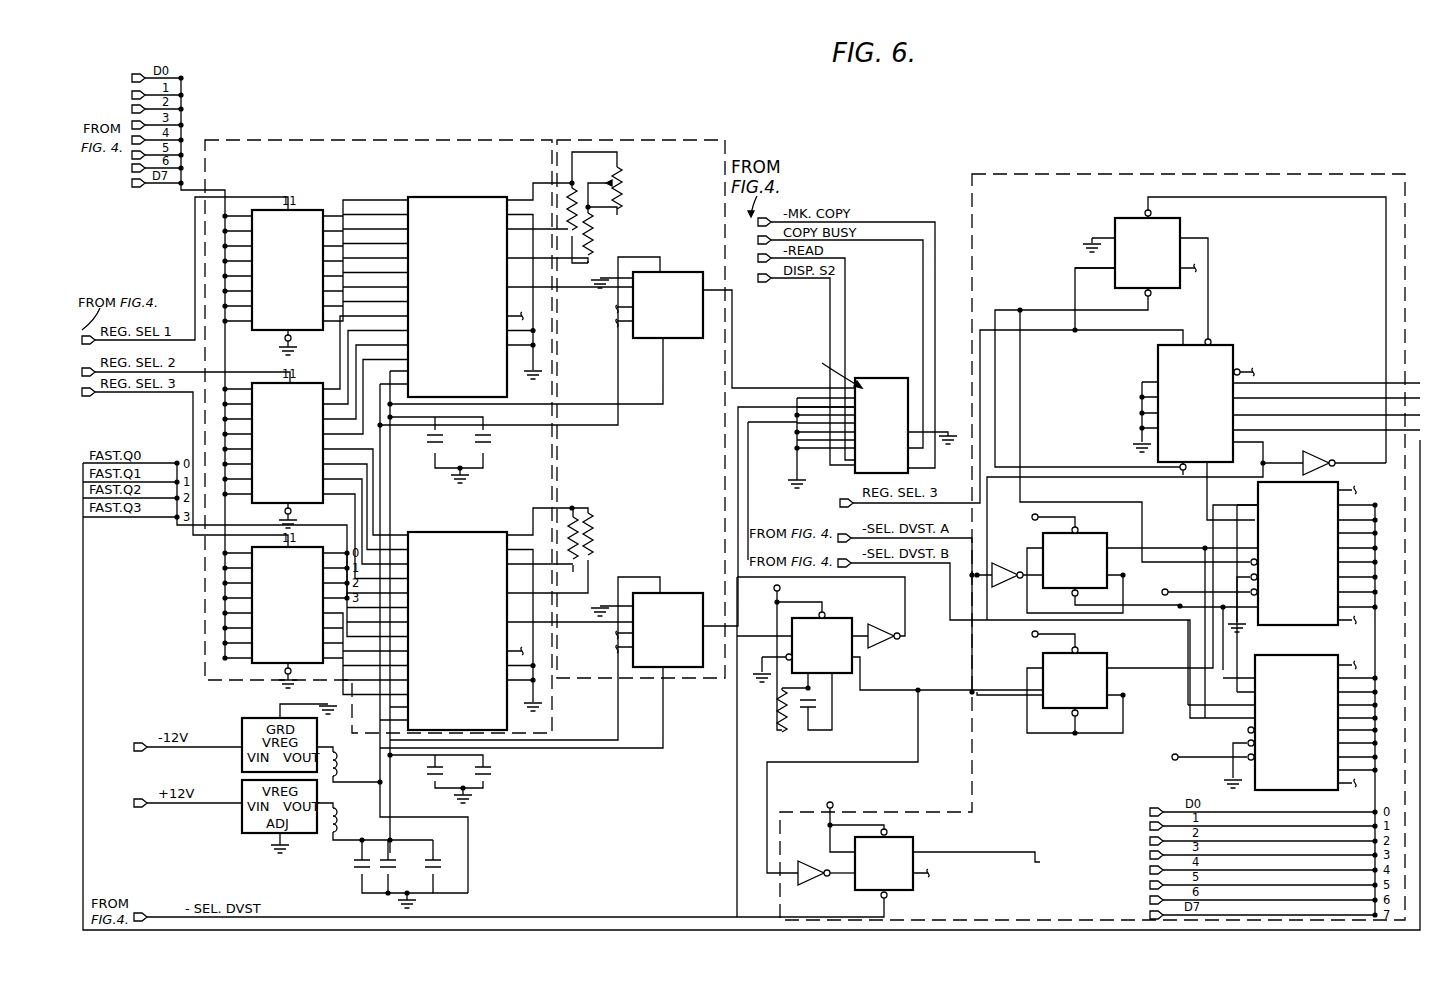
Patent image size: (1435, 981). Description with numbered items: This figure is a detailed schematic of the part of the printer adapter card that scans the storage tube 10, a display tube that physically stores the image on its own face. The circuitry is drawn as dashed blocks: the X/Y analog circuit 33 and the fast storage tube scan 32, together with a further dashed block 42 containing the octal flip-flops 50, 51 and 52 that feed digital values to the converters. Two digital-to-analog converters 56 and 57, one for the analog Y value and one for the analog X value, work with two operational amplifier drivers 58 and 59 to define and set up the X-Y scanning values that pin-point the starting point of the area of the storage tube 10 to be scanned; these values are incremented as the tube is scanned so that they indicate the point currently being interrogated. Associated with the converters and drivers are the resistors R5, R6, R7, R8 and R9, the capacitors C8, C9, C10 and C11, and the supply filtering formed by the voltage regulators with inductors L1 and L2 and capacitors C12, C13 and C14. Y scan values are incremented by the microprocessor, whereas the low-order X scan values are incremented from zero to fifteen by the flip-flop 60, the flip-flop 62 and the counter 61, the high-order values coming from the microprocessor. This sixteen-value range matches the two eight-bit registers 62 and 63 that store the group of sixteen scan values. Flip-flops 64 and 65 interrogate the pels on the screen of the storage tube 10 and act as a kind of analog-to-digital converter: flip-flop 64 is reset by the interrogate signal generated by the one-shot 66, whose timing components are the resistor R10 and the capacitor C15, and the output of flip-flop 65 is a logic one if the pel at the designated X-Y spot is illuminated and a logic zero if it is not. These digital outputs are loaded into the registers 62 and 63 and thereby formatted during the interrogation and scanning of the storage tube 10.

The storage tube 10 is at (897, 390).
The fast storage tube scan 32 is at (1280, 176).
The X/Y analog circuit 33 is at (645, 140).
The octal flip-flop / DAC block 42 is at (358, 150).
The octal flip-flop 50 is at (277, 344).
The octal flip-flop 51 is at (303, 383).
The octal flip-flop 52 is at (258, 670).
The digital-to-analog converter 56 is at (507, 385).
The digital-to-analog converter 57 is at (507, 712).
The operational amplifier driver 58 is at (688, 272).
The operational amplifier driver 59 is at (688, 593).
The flip-flop 60 is at (1182, 236).
The counter 61 is at (1158, 358).
The 8-bit register 62 is at (1100, 536).
The 8-bit register 63 is at (1260, 658).
The flip-flop 64 is at (1107, 666).
The flip-flop 65 is at (913, 842).
The one-shot 66 is at (848, 618).
The resistor R5 is at (568, 546).
The resistor R6 is at (588, 538).
The resistor R7 is at (573, 223).
The resistor R8 is at (588, 245).
The potentiometer R9 is at (615, 191).
The resistor R10 is at (780, 712).
The capacitor C8 is at (436, 442).
The capacitor C9 is at (435, 770).
The capacitor C10 is at (471, 456).
The capacitor C11 is at (488, 785).
The capacitor C12 is at (397, 874).
The capacitor C13 is at (444, 866).
The capacitor C14 is at (354, 866).
The capacitor C15 is at (816, 707).
The inductor L1 is at (336, 826).
The inductor L2 is at (336, 768).